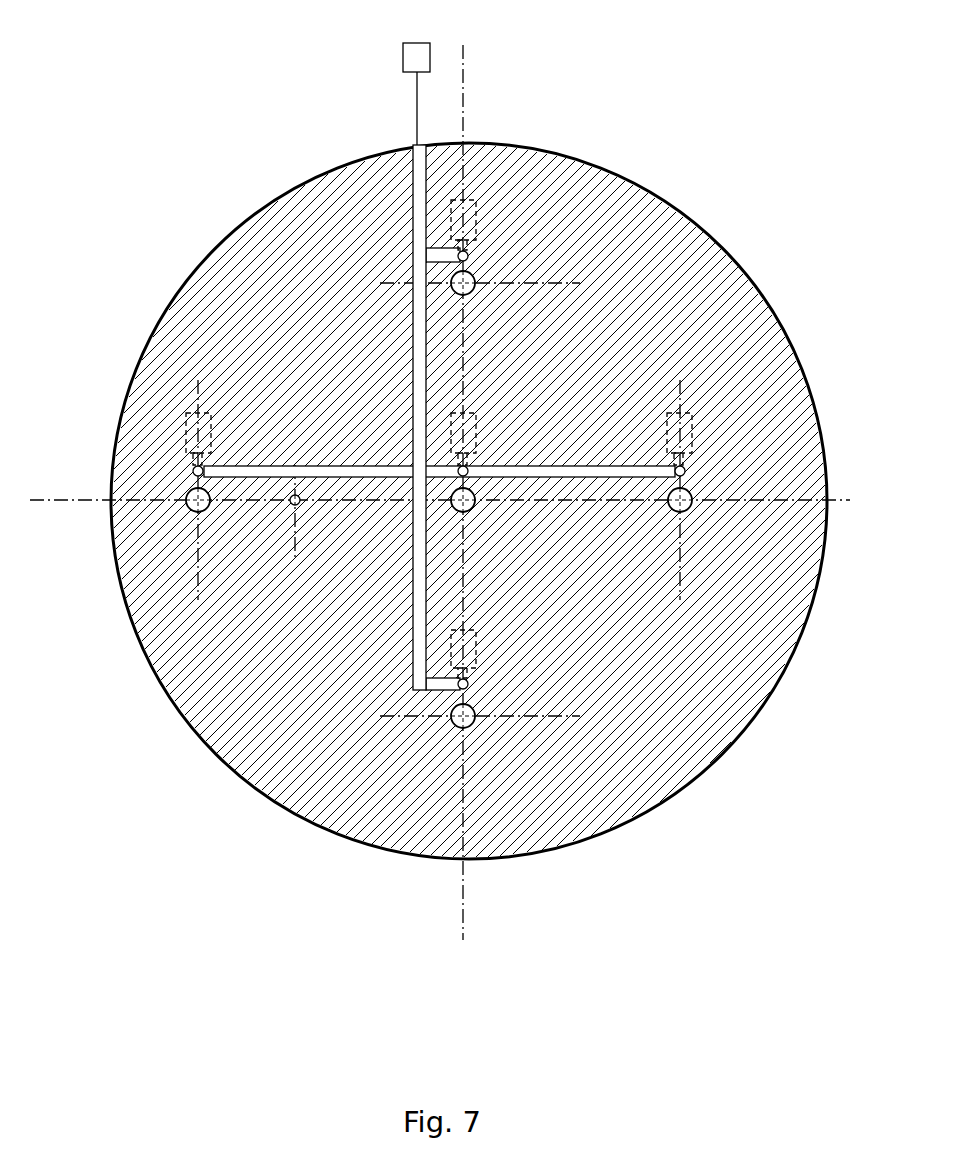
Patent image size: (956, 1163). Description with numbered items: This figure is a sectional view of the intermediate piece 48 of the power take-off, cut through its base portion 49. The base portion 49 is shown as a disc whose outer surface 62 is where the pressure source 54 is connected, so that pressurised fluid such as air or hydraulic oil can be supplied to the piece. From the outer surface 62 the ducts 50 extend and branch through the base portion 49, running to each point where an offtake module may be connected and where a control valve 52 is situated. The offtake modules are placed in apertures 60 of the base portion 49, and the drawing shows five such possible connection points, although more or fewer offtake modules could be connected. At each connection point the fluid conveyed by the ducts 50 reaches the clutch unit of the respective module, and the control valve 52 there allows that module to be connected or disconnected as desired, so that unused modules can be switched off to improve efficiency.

The intermediate piece 48 is at (440, 480).
The base portion 49 is at (230, 231).
The ducts 50 is at (411, 200).
The control valves 52 is at (478, 200).
The pressure source 54 is at (403, 52).
The apertures 60 is at (475, 272).
The outer surface 62 is at (297, 188).